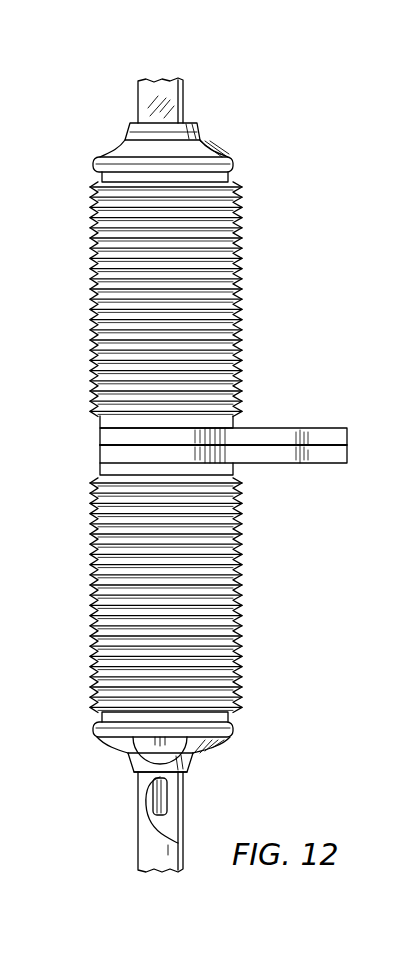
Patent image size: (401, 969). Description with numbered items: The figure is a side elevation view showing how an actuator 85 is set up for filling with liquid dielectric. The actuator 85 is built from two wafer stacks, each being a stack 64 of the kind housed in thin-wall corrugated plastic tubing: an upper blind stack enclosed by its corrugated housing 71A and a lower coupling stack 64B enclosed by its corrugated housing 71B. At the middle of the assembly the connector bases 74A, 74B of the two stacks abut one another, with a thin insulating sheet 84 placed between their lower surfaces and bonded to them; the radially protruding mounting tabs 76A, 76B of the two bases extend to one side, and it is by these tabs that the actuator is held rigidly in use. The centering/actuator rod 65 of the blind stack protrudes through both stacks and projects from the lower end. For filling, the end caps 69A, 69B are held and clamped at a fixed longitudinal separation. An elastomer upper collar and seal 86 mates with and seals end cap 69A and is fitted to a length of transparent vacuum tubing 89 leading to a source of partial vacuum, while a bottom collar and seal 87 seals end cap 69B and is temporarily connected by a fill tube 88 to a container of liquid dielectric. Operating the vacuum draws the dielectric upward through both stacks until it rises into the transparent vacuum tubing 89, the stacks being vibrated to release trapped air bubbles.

The transparent vacuum tubing 89 is at (186, 96).
The actuator 85 is at (251, 151).
The upper collar and seal 86 is at (232, 163).
The end cap 69A is at (87, 163).
The wafer stack 64 is at (208, 299).
The housing 71A is at (266, 292).
The connector base 74A is at (96, 437).
The connector base 74B is at (96, 452).
The mounting tab 76A is at (292, 427).
The mounting tab 76B is at (270, 463).
The insulating sheet 84 is at (248, 438).
The coupling stack 64B is at (225, 595).
The housing 71B is at (237, 690).
The end cap 69B is at (84, 731).
The bottom collar and seal 87 is at (118, 743).
The fill tube 88 is at (137, 812).
The centering/actuator rod 65 is at (163, 795).